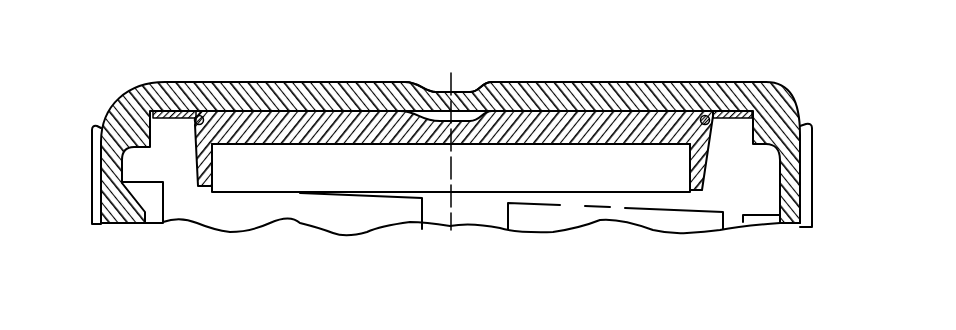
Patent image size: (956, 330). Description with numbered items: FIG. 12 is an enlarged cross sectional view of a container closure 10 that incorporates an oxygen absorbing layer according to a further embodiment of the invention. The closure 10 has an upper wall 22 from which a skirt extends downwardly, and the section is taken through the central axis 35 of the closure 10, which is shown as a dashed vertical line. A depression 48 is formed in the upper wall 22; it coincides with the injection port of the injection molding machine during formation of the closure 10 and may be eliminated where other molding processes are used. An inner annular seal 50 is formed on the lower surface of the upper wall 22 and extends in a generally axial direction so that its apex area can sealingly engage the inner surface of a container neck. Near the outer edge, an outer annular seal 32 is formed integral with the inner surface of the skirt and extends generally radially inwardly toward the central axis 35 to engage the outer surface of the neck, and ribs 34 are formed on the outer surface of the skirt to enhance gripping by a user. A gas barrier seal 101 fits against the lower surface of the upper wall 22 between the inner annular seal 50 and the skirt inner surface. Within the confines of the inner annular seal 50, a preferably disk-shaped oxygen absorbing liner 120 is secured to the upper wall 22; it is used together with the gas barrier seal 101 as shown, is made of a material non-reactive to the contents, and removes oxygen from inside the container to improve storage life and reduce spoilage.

The closure 10 is at (832, 95).
The upper wall 22 is at (627, 95).
The oxygen absorbing liner 120 is at (527, 118).
The inner annular seal 50 is at (333, 165).
The depression 48 is at (462, 93).
The outer annular seal 32 is at (170, 127).
The gas barrier seal 101 is at (718, 115).
The ribs 34 is at (96, 139).
The central axis 35 is at (452, 164).